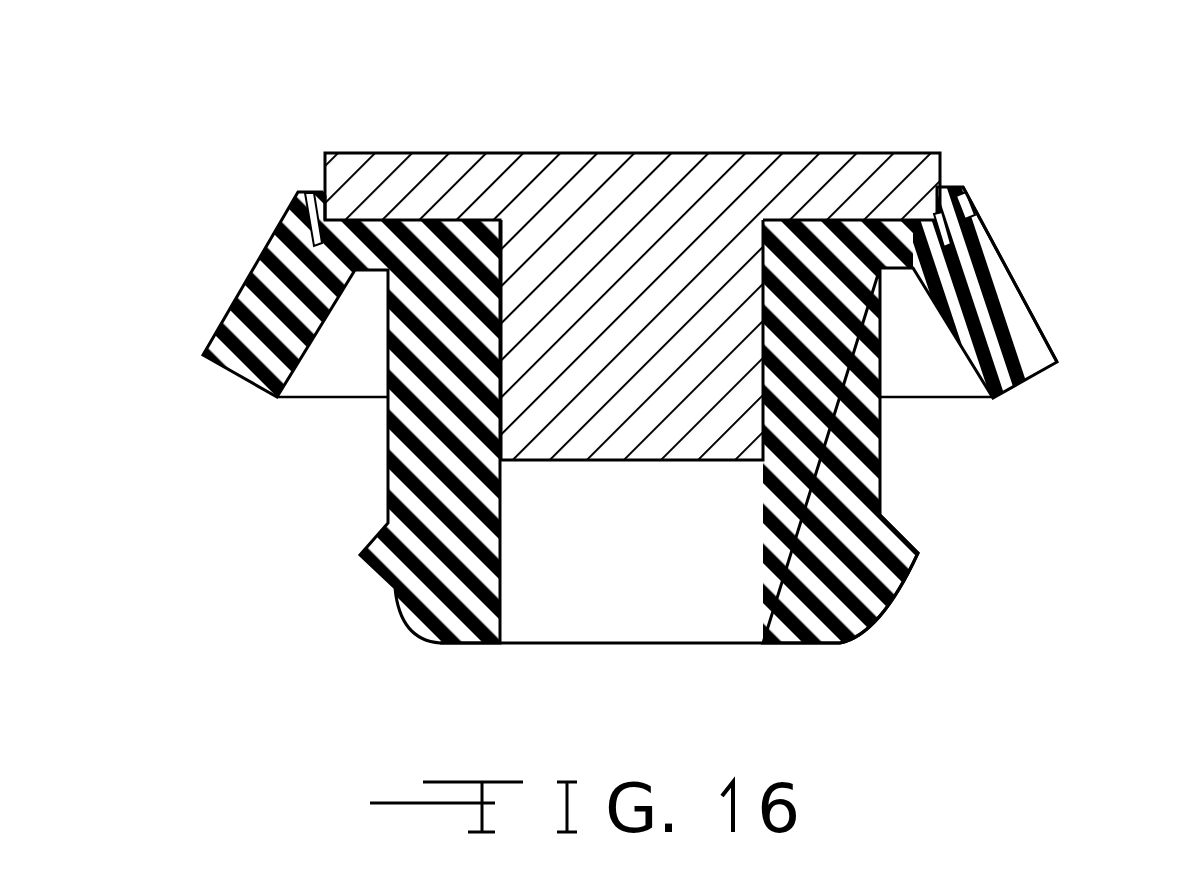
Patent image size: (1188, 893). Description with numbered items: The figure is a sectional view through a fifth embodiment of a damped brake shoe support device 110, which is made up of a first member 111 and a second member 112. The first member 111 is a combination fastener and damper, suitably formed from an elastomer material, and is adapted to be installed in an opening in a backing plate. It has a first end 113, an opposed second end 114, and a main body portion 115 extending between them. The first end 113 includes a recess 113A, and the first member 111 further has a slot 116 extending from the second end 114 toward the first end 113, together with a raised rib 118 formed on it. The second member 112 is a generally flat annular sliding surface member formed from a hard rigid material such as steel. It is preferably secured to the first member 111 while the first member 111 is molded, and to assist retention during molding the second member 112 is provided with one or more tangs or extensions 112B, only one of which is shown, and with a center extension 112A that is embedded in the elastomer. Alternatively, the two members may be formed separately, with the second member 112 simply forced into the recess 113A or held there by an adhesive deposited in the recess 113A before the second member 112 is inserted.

The damped brake shoe support device 110 is at (685, 372).
The first member 111 is at (1024, 280).
The second member 112 is at (387, 148).
The center extension 112A is at (618, 442).
The tang 112B is at (973, 200).
The first end 113 is at (306, 192).
The recess 113A is at (834, 48).
The second end 114 is at (822, 645).
The main body portion 115 is at (880, 445).
The slot 116 is at (500, 565).
The raised rib 118 is at (918, 553).